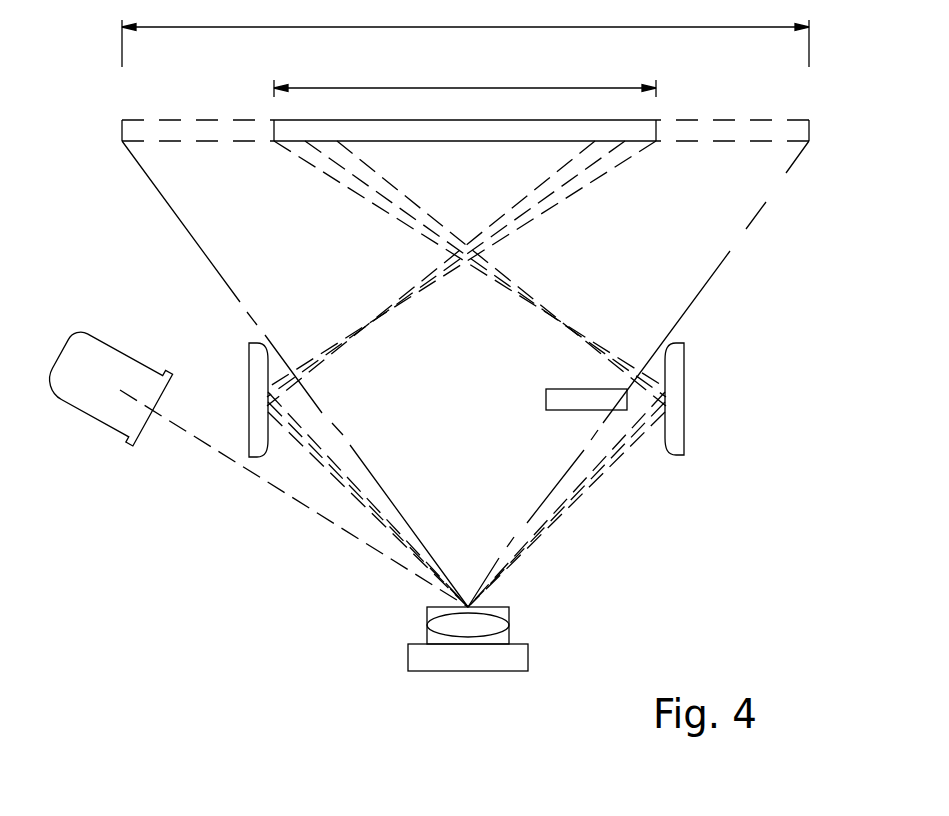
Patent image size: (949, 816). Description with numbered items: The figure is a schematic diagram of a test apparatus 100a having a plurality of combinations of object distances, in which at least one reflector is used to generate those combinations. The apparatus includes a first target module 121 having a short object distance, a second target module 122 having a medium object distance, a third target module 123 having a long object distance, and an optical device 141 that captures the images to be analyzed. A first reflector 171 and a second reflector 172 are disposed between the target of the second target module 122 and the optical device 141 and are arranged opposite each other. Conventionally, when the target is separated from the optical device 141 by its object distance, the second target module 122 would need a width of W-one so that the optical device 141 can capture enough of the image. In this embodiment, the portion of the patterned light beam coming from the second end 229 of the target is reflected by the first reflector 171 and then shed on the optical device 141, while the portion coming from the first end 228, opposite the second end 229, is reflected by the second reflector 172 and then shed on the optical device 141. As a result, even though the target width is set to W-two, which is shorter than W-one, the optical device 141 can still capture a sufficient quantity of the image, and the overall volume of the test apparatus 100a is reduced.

The test apparatus 100a is at (916, 80).
The second target module 122 is at (463, 132).
The second end 229 is at (277, 143).
The first end 228 is at (657, 143).
The third target module 123 is at (84, 338).
The second reflector 172 is at (243, 447).
The first reflector 171 is at (670, 438).
The first target module 121 is at (557, 408).
The optical device 141 is at (477, 658).